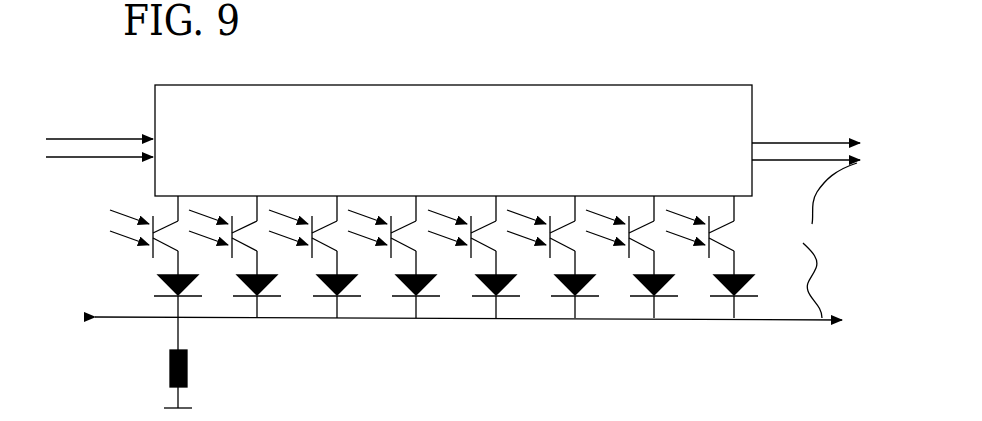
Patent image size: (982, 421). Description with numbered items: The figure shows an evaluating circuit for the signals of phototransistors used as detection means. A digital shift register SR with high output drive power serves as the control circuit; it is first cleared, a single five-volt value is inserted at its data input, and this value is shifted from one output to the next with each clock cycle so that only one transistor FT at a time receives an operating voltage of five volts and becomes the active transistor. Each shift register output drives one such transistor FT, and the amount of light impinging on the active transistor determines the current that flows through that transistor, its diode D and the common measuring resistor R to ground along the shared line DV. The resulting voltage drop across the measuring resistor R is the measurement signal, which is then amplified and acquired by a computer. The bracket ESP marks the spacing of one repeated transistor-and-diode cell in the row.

The shift register SR is at (453, 140).
The transistor FT is at (152, 258).
The diode D is at (725, 300).
The measuring resistor R is at (187, 368).
The supply voltage line DV is at (458, 332).
The sensing element (pixel cell) span ESP is at (810, 240).